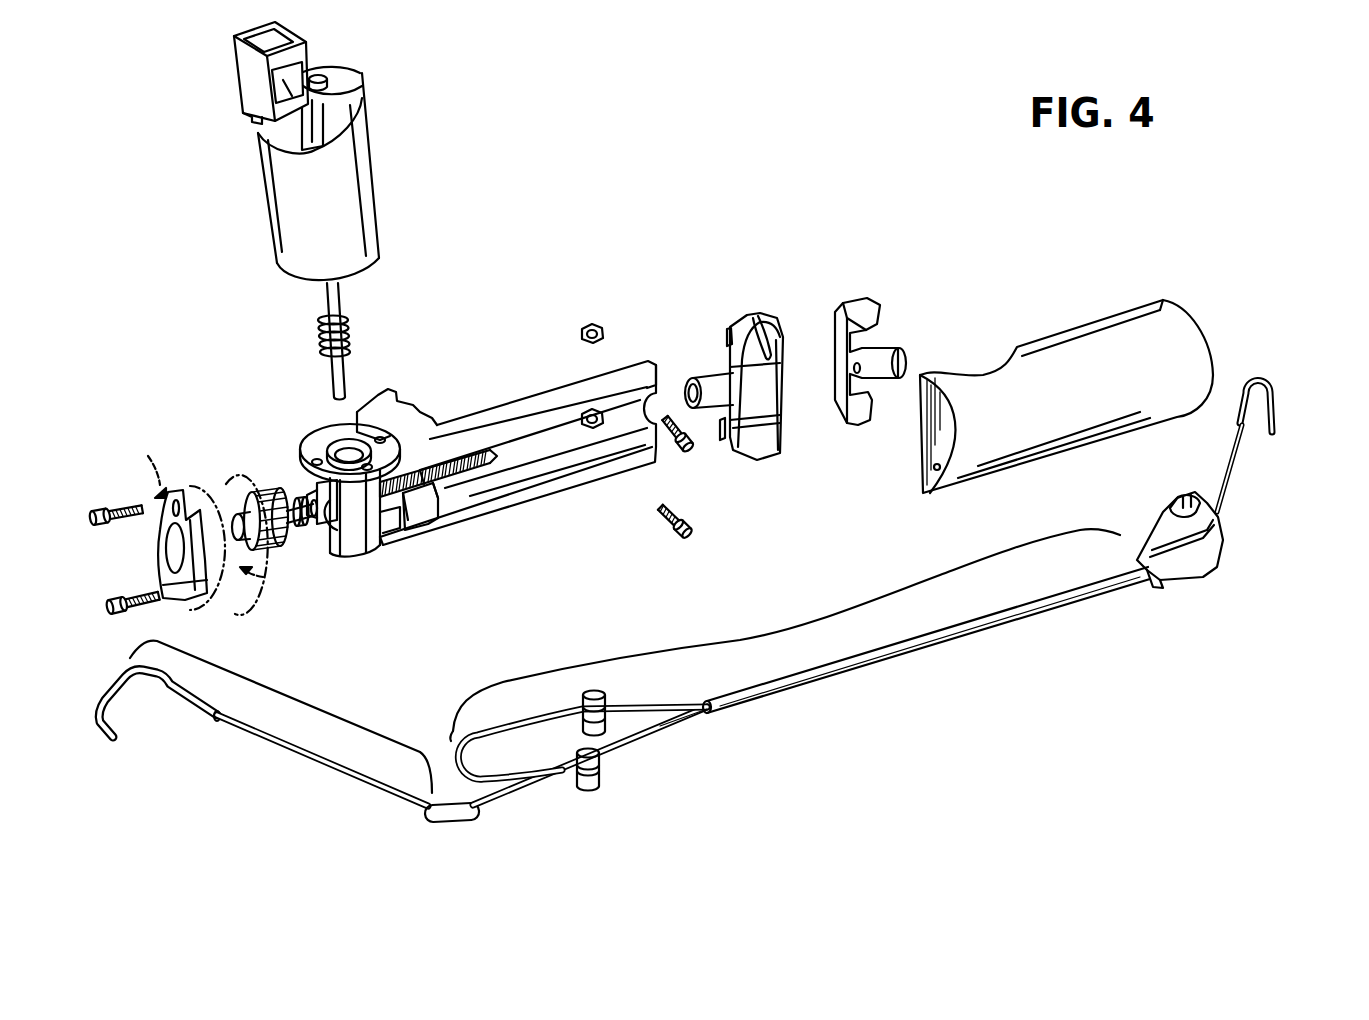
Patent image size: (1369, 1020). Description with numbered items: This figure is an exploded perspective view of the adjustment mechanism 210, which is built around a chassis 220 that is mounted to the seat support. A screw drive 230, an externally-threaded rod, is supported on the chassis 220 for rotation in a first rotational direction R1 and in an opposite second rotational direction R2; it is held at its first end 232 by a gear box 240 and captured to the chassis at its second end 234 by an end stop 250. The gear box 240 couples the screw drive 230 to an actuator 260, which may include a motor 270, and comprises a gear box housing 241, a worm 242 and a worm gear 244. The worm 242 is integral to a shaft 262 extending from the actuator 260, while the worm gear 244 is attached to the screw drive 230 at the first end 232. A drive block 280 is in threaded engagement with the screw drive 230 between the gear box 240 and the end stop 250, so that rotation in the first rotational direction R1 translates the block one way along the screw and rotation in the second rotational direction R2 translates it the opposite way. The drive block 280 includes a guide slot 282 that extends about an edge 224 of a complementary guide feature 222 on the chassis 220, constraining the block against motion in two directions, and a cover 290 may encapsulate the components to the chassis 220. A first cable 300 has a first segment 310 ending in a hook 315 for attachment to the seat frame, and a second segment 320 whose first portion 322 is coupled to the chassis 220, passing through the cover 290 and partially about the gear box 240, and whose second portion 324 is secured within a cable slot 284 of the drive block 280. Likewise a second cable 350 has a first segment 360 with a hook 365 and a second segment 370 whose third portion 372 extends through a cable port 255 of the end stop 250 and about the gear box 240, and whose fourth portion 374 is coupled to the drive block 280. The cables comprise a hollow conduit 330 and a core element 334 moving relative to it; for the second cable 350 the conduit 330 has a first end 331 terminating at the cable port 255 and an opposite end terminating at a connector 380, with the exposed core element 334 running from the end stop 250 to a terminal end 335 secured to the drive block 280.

The adjustment mechanism 210 is at (497, 221).
The chassis 220 is at (506, 426).
The guide feature 222 is at (535, 405).
The edge 224 is at (608, 365).
The screw drive 230 is at (463, 472).
The first end 232 is at (300, 500).
The second end 234 is at (497, 456).
The gear box 240 is at (370, 550).
The gear box housing 241 is at (318, 445).
The worm 242 is at (352, 322).
The worm gear 244 is at (272, 550).
The end stop 250 is at (857, 424).
The cable port 255 is at (900, 352).
The actuator 260 is at (250, 118).
The shaft 262 is at (342, 295).
The motor 270 is at (290, 208).
The drive block 280 is at (762, 318).
The guide slot 282 is at (727, 338).
The cable slot 284 is at (782, 420).
The cover 290 is at (1108, 313).
The first cable 300 is at (262, 719).
The first segment 310 is at (288, 707).
The hook 315 is at (104, 690).
The second segment 320 is at (578, 778).
The first portion 322 is at (432, 820).
The second portion 324 is at (567, 782).
The conduit 330 is at (905, 663).
The first end 331 is at (707, 700).
The core element 334 is at (680, 723).
The terminal end 335 is at (607, 713).
The second cable 350 is at (873, 663).
The first segment 360 is at (1283, 383).
The hook 365 is at (1258, 380).
The second segment 370 is at (750, 654).
The third portion 372 is at (455, 755).
The fourth portion 374 is at (607, 702).
The connector 380 is at (1190, 563).
The first rotational direction R1 is at (247, 557).
The second rotational direction R2 is at (157, 523).